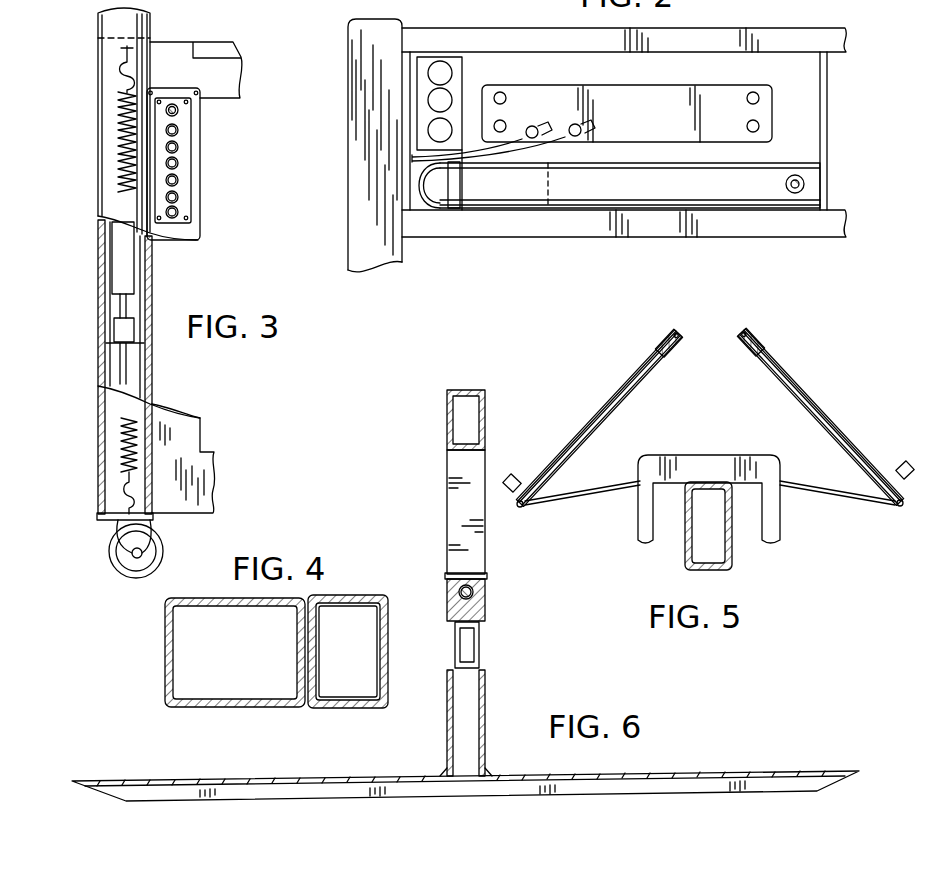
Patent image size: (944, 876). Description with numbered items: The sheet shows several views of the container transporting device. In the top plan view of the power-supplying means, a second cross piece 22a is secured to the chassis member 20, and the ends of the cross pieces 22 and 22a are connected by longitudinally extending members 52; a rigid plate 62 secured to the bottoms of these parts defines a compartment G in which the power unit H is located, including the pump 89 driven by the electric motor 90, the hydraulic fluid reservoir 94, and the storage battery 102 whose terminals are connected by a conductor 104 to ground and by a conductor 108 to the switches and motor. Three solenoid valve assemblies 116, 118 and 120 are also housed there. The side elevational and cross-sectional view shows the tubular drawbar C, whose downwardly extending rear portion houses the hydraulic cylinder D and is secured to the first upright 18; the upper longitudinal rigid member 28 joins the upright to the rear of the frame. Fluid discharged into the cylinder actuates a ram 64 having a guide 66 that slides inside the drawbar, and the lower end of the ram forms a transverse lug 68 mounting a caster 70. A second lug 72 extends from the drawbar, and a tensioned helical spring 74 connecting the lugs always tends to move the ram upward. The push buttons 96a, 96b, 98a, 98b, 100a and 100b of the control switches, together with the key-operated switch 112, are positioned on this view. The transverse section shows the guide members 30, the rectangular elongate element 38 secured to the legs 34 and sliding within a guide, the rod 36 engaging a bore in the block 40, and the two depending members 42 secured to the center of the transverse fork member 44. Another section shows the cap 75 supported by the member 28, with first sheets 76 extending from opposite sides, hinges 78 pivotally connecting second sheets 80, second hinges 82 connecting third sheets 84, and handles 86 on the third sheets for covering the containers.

In FIG. 6, the first upright 18 is at (470, 467).
In FIG. 3, the chassis member 20 is at (200, 473).
In FIG. 6, the chassis member 20 is at (478, 640).
In FIG. 2, the lower rear cross piece 22 is at (567, 230).
In FIG. 2, the second cross piece 22a is at (490, 36).
In FIG. 3, the longitudinally extending rigid member 28 is at (172, 48).
In FIG. 5, the longitudinally extending rigid member 28 is at (735, 548).
In FIG. 6, the longitudinally extending rigid member 28 is at (483, 404).
In FIG. 4, the guide member 30 is at (388, 620).
In FIG. 4, the leg 34 is at (218, 708).
In FIG. 6, the rod 36 is at (485, 592).
In FIG. 4, the vertical elongate element 38 is at (343, 606).
In FIG. 6, the block 40 is at (485, 578).
In FIG. 6, the depending member 42 is at (486, 703).
In FIG. 6, the fork 44 is at (305, 778).
In FIG. 2, the longitudinally extending member 52 is at (357, 104).
In FIG. 2, the rigid plate 62 is at (603, 81).
In FIG. 3, the ram 64 is at (124, 308).
In FIG. 3, the guide 66 is at (144, 343).
In FIG. 3, the transverse lug 68 is at (108, 522).
In FIG. 3, the caster 70 is at (152, 551).
In FIG. 3, the second lug 72 is at (118, 53).
In FIG. 3, the helical spring 74 is at (118, 152).
In FIG. 5, the cap 75 is at (677, 454).
In FIG. 5, the first sheet 76 is at (563, 508).
In FIG. 5, the hinge 78 is at (520, 508).
In FIG. 5, the second sheet 80 is at (593, 430).
In FIG. 5, the second hinge 82 is at (678, 334).
In FIG. 5, the third sheet 84 is at (578, 427).
In FIG. 5, the handle 86 is at (523, 472).
In FIG. 2, the pump 89 is at (627, 196).
In FIG. 2, the electric motor 90 is at (497, 196).
In FIG. 2, the hydraulic fluid reservoir 94 is at (753, 194).
In FIG. 3, the push button 96a is at (179, 200).
In FIG. 3, the push button 96b is at (179, 217).
In FIG. 3, the push button 98a is at (179, 166).
In FIG. 3, the push button 98b is at (179, 183).
In FIG. 3, the push button 100a is at (179, 131).
In FIG. 3, the push button 100b is at (179, 149).
In FIG. 2, the storage battery 102 is at (676, 123).
In FIG. 2, the conductor 104 is at (482, 166).
In FIG. 2, the conductor 108 is at (468, 151).
In FIG. 3, the key switch 112 is at (179, 111).
In FIG. 2, the solenoid valve assembly 116 is at (448, 73).
In FIG. 2, the solenoid valve assembly 118 is at (428, 99).
In FIG. 2, the solenoid valve assembly 120 is at (428, 133).
In FIG. 3, the drawbar C is at (97, 21).
In FIG. 3, the hydraulic cylinder D is at (130, 273).
In FIG. 2, the compartment G is at (663, 63).
In FIG. 2, the power unit H is at (432, 196).